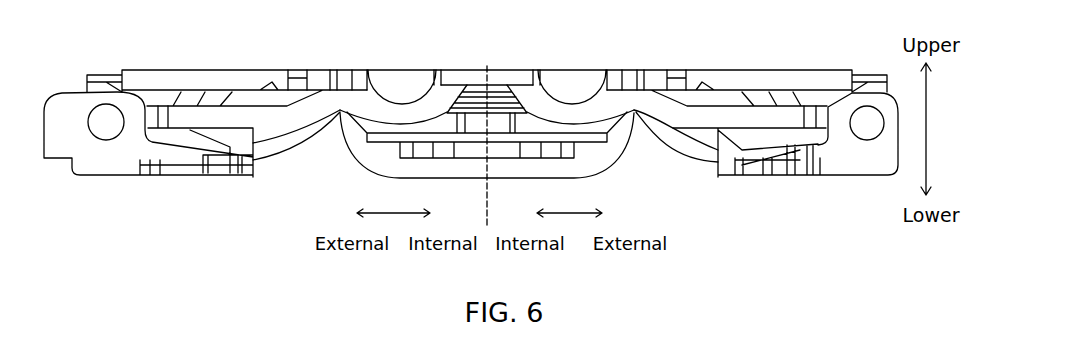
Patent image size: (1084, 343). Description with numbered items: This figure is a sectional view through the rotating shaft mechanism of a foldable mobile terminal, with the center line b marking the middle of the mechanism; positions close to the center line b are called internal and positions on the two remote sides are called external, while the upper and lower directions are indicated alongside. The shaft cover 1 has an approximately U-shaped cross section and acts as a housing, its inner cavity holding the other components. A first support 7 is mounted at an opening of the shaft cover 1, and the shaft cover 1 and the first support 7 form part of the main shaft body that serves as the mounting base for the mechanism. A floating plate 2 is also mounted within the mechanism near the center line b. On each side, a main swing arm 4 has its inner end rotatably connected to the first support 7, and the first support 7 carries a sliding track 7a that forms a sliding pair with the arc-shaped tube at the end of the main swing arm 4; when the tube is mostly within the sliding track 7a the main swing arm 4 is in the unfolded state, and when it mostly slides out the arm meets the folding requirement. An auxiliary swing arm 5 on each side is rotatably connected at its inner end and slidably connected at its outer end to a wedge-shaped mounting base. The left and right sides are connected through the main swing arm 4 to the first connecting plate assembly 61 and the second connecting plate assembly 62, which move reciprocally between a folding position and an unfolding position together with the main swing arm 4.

The shaft cover 1 is at (483, 173).
The floating plate 2 is at (478, 72).
The main swing arm 4 is at (188, 117).
The auxiliary swing arm 5 is at (303, 142).
The first support 7 is at (402, 83).
The sliding track 7a is at (358, 73).
The first connecting plate assembly 61 is at (242, 67).
The second connecting plate assembly 62 is at (752, 77).
The center line b is at (478, 148).